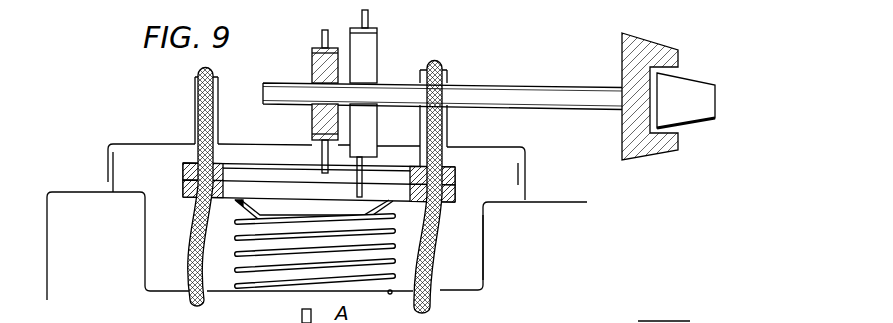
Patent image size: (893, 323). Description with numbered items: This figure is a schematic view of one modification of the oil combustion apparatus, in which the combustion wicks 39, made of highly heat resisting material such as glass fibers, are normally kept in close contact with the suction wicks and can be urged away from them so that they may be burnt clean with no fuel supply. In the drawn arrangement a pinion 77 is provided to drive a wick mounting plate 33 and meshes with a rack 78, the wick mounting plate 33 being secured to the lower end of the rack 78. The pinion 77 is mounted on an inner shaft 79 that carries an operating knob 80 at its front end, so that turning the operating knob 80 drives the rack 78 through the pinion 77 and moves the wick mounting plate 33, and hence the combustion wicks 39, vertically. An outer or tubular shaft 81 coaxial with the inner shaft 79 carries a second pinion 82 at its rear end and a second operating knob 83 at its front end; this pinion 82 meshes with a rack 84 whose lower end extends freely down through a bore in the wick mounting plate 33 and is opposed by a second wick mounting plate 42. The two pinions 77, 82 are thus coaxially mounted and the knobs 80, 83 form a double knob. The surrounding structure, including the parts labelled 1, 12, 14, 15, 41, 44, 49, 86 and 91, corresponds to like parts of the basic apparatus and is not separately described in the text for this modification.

The housing body 1 is at (47, 248).
The base body 12 is at (467, 248).
The cover 14 is at (470, 150).
The side wall 15 is at (483, 275).
The wick mounting plate 33 is at (258, 160).
The combustion wick 39 is at (203, 128).
The upper clamp block 41 is at (452, 180).
The wick mounting plate 42 is at (357, 213).
The lower clamp block 44 is at (452, 193).
The heating coil 49 is at (394, 275).
The pinion 77 is at (318, 72).
The rack 78 is at (322, 37).
The inner shaft 79 is at (547, 100).
The operating knob 80 is at (695, 90).
The outer or tubular shaft 81 is at (495, 72).
The pinion 82 is at (370, 50).
The operating knob 83 is at (660, 55).
The rack 84 is at (368, 18).
The element 86 is at (286, 313).
The element 91 is at (670, 320).